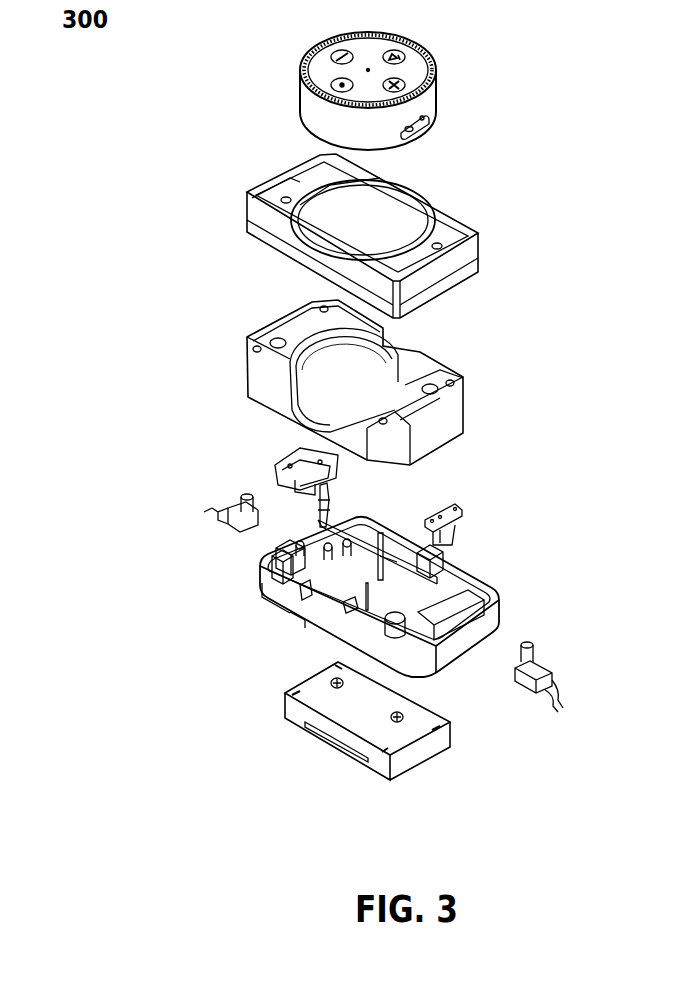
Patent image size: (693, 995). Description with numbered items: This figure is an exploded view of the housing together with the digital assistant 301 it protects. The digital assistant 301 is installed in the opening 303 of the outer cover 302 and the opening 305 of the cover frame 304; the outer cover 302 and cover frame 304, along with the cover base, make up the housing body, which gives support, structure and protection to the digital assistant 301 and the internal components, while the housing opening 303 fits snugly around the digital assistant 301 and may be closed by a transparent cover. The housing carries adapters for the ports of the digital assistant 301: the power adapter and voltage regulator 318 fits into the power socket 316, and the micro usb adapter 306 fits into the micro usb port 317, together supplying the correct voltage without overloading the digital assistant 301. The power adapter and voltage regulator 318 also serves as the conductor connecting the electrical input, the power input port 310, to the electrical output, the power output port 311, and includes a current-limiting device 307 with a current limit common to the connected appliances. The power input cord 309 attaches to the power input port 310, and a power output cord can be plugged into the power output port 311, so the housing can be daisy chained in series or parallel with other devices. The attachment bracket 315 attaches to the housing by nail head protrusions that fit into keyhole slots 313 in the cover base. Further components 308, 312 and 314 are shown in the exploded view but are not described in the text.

The digital assistant 301 is at (412, 70).
The outer cover 302 is at (447, 235).
The opening 303 is at (327, 220).
The cover frame 304 is at (445, 373).
The opening 305 is at (327, 370).
The micro usb adapter 306 is at (443, 553).
The current-limiting device 307 is at (290, 447).
The cable connector 308 is at (240, 505).
The power input cord 309 is at (548, 672).
The power input port 310 is at (483, 592).
The power output port 311 is at (282, 540).
The housing side wall 312 is at (270, 597).
The keyhole slots 313 is at (303, 608).
The screws 314 is at (398, 722).
The attachment bracket 315 is at (295, 718).
The power socket 316 is at (415, 125).
The micro usb port 317 is at (410, 128).
The power adapter and voltage regulator 318 is at (397, 562).